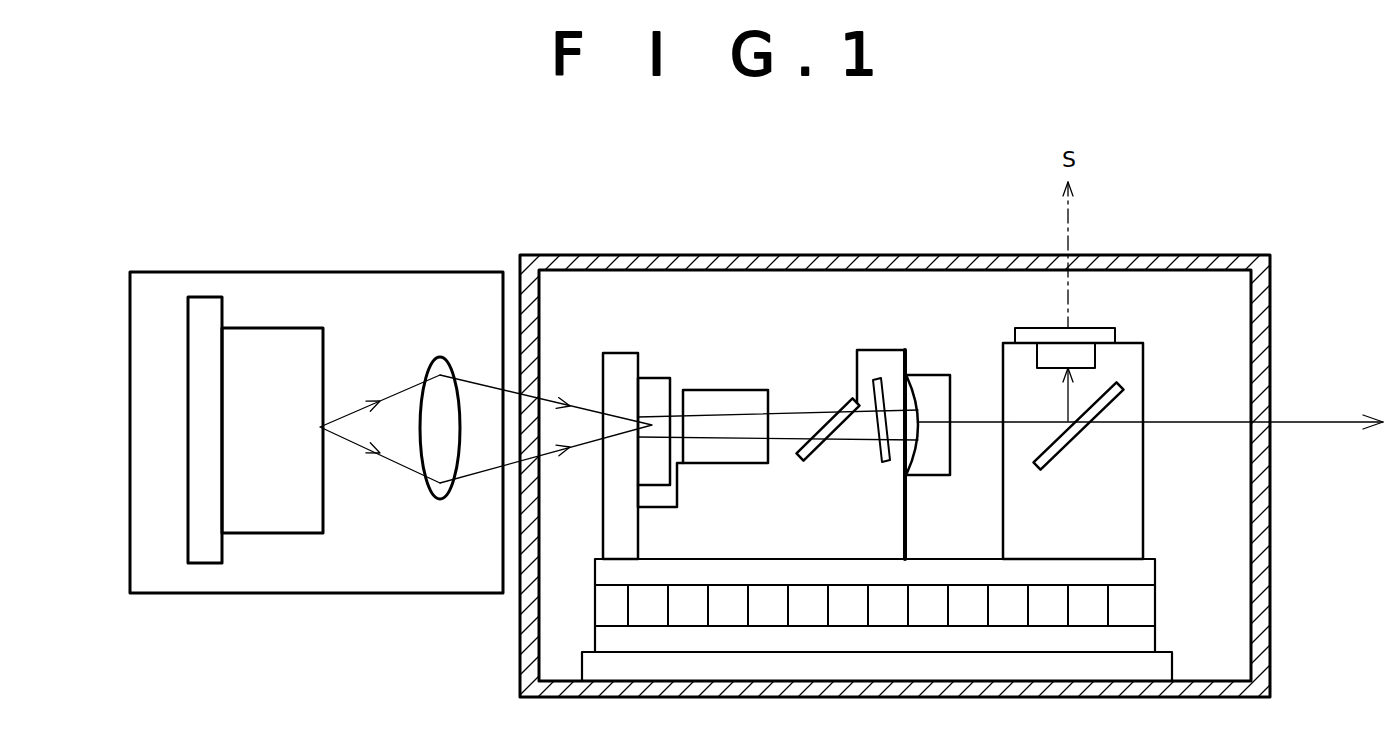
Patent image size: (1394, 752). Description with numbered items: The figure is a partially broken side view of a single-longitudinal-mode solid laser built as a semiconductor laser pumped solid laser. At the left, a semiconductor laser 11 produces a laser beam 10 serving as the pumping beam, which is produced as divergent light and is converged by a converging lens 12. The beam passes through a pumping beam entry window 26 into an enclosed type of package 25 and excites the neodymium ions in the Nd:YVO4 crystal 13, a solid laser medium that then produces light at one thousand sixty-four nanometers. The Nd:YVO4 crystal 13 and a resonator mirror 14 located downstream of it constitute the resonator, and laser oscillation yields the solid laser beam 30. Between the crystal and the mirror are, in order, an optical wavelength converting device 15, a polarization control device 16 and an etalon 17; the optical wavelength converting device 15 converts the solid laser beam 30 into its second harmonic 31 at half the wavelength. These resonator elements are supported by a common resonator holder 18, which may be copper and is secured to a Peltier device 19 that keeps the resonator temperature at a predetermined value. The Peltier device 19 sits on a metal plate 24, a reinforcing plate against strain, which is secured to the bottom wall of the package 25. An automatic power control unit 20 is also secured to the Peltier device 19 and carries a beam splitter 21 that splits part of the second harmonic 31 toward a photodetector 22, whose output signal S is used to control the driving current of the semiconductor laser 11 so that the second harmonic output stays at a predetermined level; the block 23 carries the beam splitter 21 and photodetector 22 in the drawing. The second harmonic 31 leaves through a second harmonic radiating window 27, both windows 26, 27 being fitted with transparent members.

The laser beam 10 is at (400, 392).
The semiconductor laser 11 is at (265, 340).
The converging lens 12 is at (442, 360).
The Nd:YVO4 crystal 13 is at (652, 383).
The resonator mirror 14 is at (933, 383).
The optical wavelength converting device 15 is at (702, 398).
The polarization control device 16 is at (836, 403).
The etalon 17 is at (880, 380).
The resonator holder 18 is at (890, 533).
The Peltier device 19 is at (1140, 575).
The automatic power control (APC) unit 20 is at (1137, 322).
The beam splitter 21 is at (1147, 370).
The photodetector 22 is at (1030, 327).
The block 23 is at (1128, 502).
The metal plate 24 is at (1157, 668).
The package 25 is at (1272, 268).
The pumping beam entry window 26 is at (540, 377).
The second harmonic radiating window 27 is at (1273, 403).
The solid laser beam 30 is at (793, 413).
The second harmonic 31 is at (1180, 420).